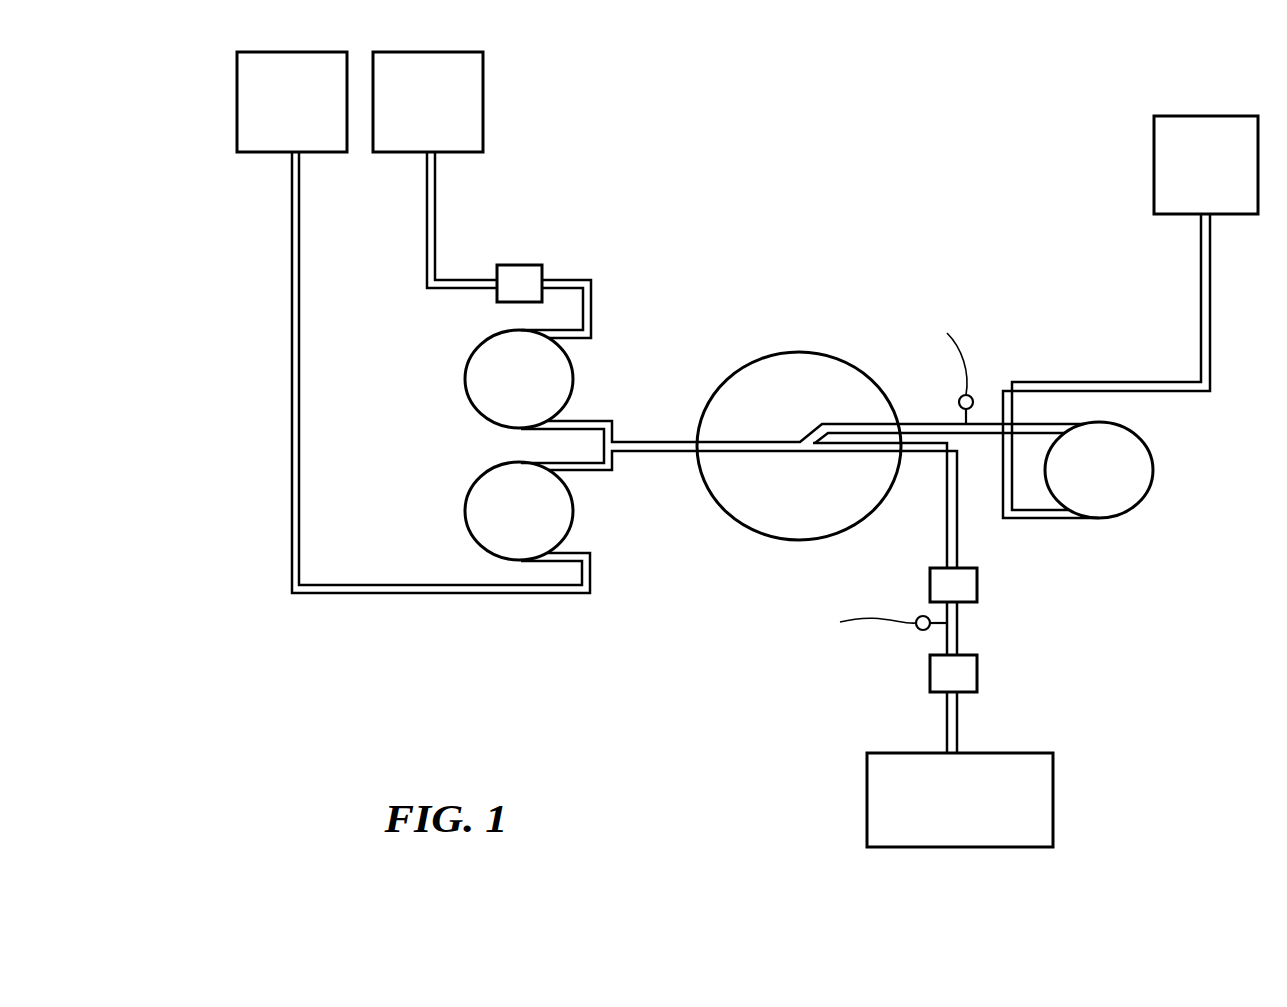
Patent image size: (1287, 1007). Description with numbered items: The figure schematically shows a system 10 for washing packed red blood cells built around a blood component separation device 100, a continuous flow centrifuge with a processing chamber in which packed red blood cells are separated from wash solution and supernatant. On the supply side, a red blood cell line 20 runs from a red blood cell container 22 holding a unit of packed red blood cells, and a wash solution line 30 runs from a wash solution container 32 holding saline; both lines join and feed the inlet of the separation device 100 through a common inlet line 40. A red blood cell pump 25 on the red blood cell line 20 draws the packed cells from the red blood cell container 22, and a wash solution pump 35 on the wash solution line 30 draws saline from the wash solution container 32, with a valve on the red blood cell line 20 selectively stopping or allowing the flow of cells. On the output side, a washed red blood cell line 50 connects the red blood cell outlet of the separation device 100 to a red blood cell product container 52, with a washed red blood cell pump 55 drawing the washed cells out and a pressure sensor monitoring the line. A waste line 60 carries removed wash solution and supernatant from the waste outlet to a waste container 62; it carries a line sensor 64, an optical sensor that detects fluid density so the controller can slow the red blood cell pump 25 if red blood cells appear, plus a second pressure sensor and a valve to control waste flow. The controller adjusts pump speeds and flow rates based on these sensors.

The system 10 is at (160, 150).
The red blood cell line 20 is at (591, 281).
The red blood cell container 22 is at (428, 102).
The red blood cell pump 25 is at (465, 397).
The wash solution line 30 is at (392, 594).
The wash solution container 32 is at (292, 102).
The wash solution pump 35 is at (465, 518).
The inlet line 40 is at (668, 447).
The washed red blood cell line 50 is at (1108, 382).
The red blood cell product container 52 is at (1206, 165).
The washed red blood cell pump 55 is at (1152, 490).
The waste line 60 is at (957, 715).
The waste container 62 is at (960, 800).
The line sensor 64 is at (977, 580).
The blood component separation device 100 is at (799, 446).